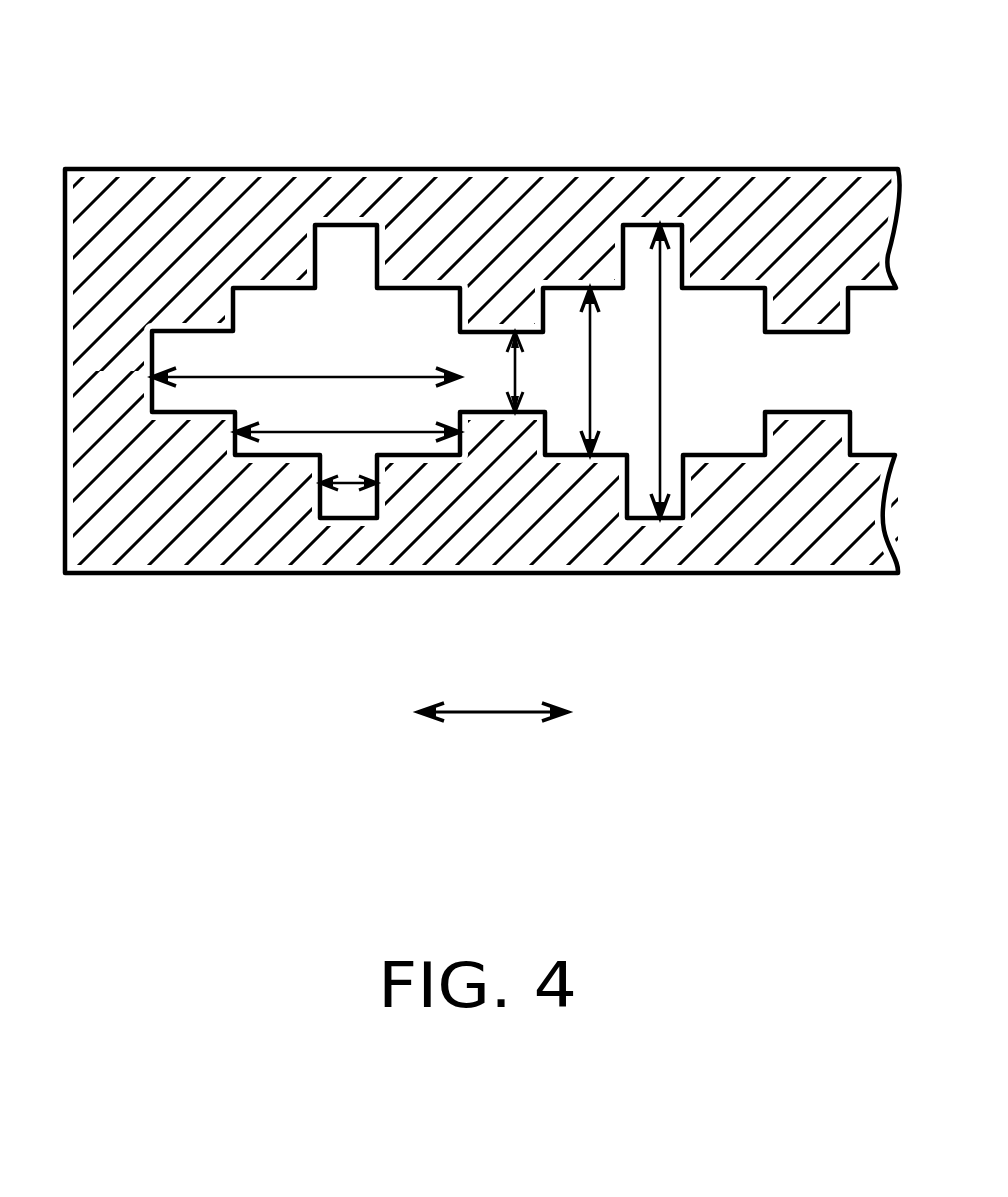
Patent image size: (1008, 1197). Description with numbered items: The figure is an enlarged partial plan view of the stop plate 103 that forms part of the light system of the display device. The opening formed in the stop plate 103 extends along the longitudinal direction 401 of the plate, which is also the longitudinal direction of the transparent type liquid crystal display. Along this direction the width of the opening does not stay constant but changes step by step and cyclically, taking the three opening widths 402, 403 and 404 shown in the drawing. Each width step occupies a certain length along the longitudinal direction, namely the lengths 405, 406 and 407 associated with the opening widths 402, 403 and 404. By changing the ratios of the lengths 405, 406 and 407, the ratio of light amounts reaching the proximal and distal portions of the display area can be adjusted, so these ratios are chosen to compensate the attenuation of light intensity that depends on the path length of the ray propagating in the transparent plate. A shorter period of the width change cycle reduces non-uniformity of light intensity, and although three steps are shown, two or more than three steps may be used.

The stop plate 103 is at (391, 121).
The longitudinal direction 401 is at (493, 756).
The opening width 402 is at (660, 402).
The opening width 403 is at (590, 394).
The opening width 404 is at (515, 372).
The length 405 is at (350, 483).
The length 406 is at (290, 432).
The length 407 is at (227, 377).